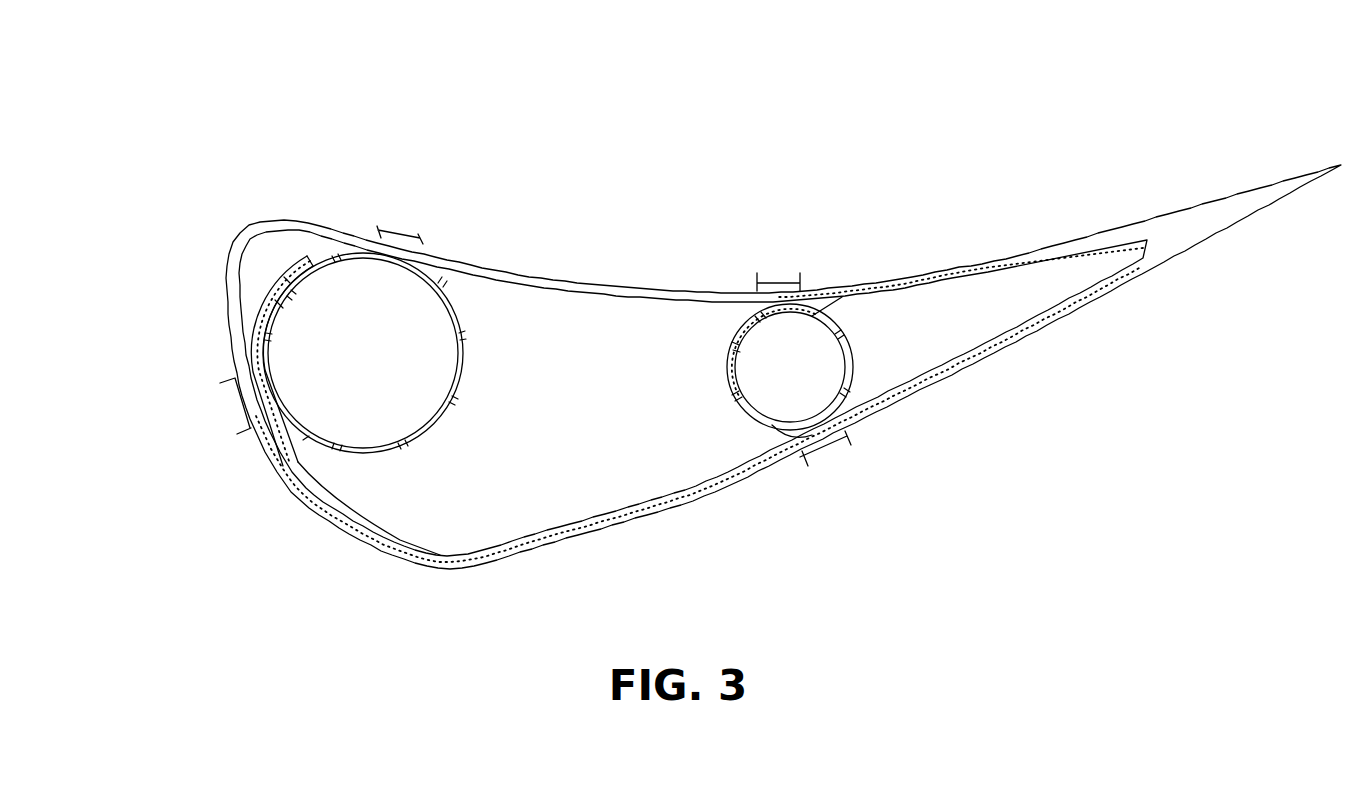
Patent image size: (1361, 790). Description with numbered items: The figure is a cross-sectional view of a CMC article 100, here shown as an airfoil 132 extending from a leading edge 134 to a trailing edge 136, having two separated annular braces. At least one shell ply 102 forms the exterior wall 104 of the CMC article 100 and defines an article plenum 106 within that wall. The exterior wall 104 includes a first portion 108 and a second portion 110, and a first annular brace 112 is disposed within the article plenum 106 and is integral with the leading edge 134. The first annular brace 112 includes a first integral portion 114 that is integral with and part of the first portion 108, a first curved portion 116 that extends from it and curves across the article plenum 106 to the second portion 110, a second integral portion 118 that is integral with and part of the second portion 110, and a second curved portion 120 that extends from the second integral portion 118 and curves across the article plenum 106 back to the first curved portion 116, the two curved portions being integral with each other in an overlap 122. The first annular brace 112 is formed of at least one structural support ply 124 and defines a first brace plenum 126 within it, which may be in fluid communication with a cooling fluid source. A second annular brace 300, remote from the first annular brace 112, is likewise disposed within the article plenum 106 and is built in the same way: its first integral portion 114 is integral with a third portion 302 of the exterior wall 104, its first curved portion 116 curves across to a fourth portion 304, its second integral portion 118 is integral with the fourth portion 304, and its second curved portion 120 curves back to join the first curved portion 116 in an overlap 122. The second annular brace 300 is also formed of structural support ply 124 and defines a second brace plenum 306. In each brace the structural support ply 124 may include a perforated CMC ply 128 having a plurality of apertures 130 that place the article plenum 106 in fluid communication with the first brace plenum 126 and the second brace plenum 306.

The CMC article 100 is at (252, 180).
The shell ply 102 is at (293, 240).
The exterior wall 104 is at (353, 232).
The article plenum 106 is at (252, 306).
The first portion 108 is at (237, 397).
The second portion 110 is at (393, 240).
The first annular brace 112 is at (275, 225).
The first integral portion 114 is at (262, 402).
The first curved portion 116 is at (277, 258).
The second integral portion 118 is at (390, 240).
The second curved portion 120 is at (363, 463).
The overlap 122 is at (253, 330).
The structural support ply 124 is at (415, 447).
The first brace plenum 126 is at (375, 355).
The perforated CMC ply 128 is at (270, 300).
The apertures 130 is at (336, 254).
The airfoil 132 is at (590, 112).
The leading edge 134 is at (150, 302).
The trailing edge 136 is at (1203, 150).
The second annular brace 300 is at (880, 385).
The third portion 302 is at (780, 280).
The fourth portion 304 is at (815, 455).
The second brace plenum 306 is at (793, 362).